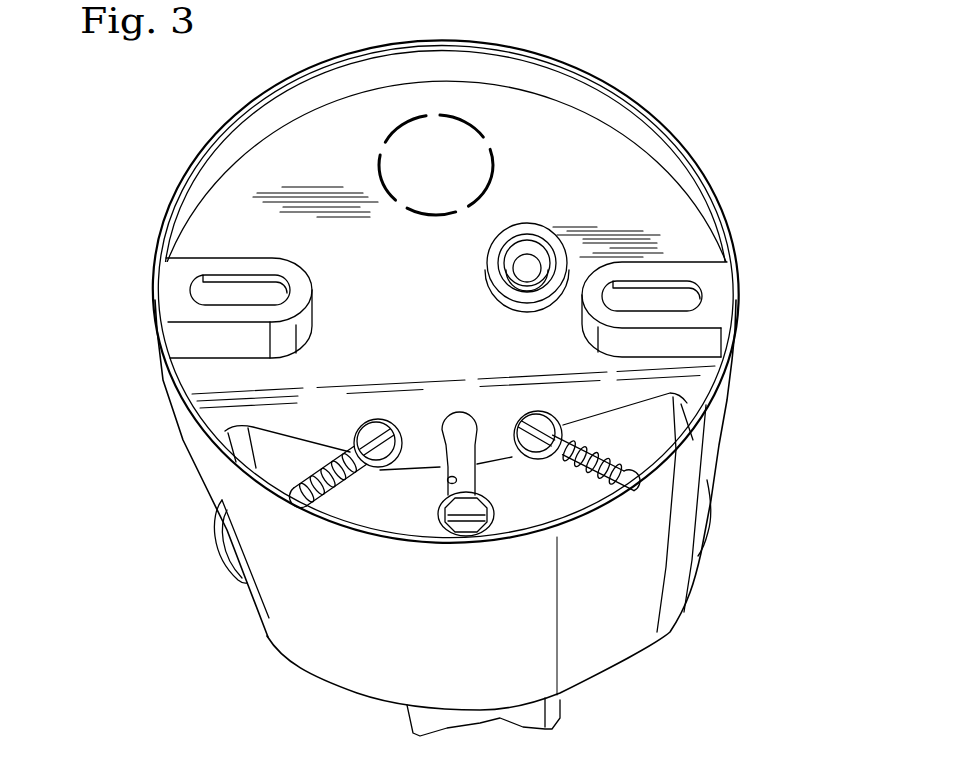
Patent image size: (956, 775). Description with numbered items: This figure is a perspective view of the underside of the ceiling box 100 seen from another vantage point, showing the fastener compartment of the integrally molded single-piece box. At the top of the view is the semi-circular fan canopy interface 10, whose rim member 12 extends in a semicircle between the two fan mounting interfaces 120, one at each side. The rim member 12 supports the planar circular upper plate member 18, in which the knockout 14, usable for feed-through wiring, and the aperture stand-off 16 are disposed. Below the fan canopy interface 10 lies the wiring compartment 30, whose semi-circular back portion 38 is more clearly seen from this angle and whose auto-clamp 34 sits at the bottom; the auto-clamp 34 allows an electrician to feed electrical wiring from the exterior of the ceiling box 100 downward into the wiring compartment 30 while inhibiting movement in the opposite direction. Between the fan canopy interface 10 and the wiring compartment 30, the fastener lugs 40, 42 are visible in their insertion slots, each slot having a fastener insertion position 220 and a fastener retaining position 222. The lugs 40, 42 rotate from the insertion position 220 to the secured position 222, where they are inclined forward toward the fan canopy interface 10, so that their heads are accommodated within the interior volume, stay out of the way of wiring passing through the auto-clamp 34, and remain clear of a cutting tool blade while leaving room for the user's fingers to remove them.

The semi-circular fan canopy interface 10 is at (188, 139).
The rim member 12 is at (607, 90).
The knockout 14 is at (451, 145).
The aperture stand-off 16 is at (530, 221).
The planar circular upper plate member 18 is at (342, 153).
The wiring compartment 30 is at (665, 606).
The auto-clamp portion 34 is at (543, 708).
The semi-circular back portion 38 is at (283, 637).
The fastener lug 40 is at (383, 423).
The fastener lug 42 is at (480, 520).
The ceiling box 100 is at (768, 73).
The fan mounting interfaces 120 is at (167, 291).
The fastener insertion position 220 is at (457, 414).
The fastener retaining position 222 is at (452, 482).